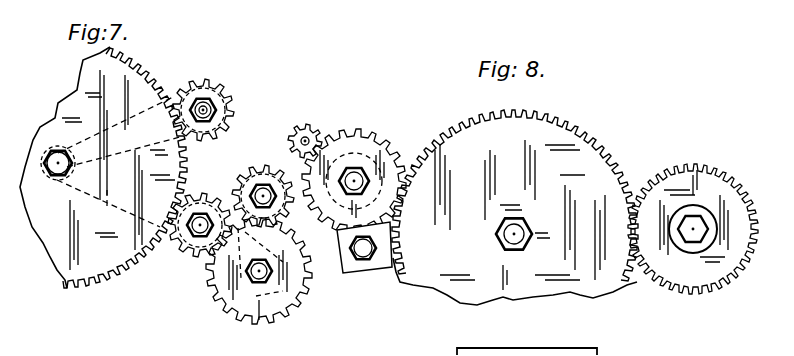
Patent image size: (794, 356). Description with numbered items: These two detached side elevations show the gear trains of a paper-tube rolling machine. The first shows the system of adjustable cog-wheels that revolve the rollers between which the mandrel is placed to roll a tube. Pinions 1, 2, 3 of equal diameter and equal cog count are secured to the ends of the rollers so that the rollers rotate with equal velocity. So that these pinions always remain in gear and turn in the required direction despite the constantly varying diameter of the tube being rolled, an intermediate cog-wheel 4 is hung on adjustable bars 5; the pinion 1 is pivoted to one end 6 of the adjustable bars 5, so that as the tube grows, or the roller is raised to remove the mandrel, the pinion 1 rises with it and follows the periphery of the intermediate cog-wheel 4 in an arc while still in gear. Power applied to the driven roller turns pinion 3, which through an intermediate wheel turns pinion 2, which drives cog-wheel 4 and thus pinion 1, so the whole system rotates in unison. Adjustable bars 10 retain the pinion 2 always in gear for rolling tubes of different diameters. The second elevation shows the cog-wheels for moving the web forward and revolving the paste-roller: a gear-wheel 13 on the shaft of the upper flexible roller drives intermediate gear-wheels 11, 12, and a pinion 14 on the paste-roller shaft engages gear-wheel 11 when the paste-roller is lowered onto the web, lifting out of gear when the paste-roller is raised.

In FIG. 7, the pinion 1 is at (209, 110).
In FIG. 7, the pinion 2 is at (199, 231).
In FIG. 7, the pinion 3 is at (203, 186).
In FIG. 7, the intermediate cog-wheel 4 is at (114, 168).
In FIG. 7, the adjustable bars 5 is at (118, 162).
In FIG. 7, the end of the adjustable bars 6 is at (216, 84).
In FIG. 7, the adjustable bars 10 is at (213, 285).
In FIG. 8, the intermediate gear-wheel 11 is at (354, 201).
In FIG. 8, the intermediate gear-wheel 12 is at (496, 149).
In FIG. 8, the gear-wheel 13 is at (693, 229).
In FIG. 8, the pinion 14 is at (305, 131).